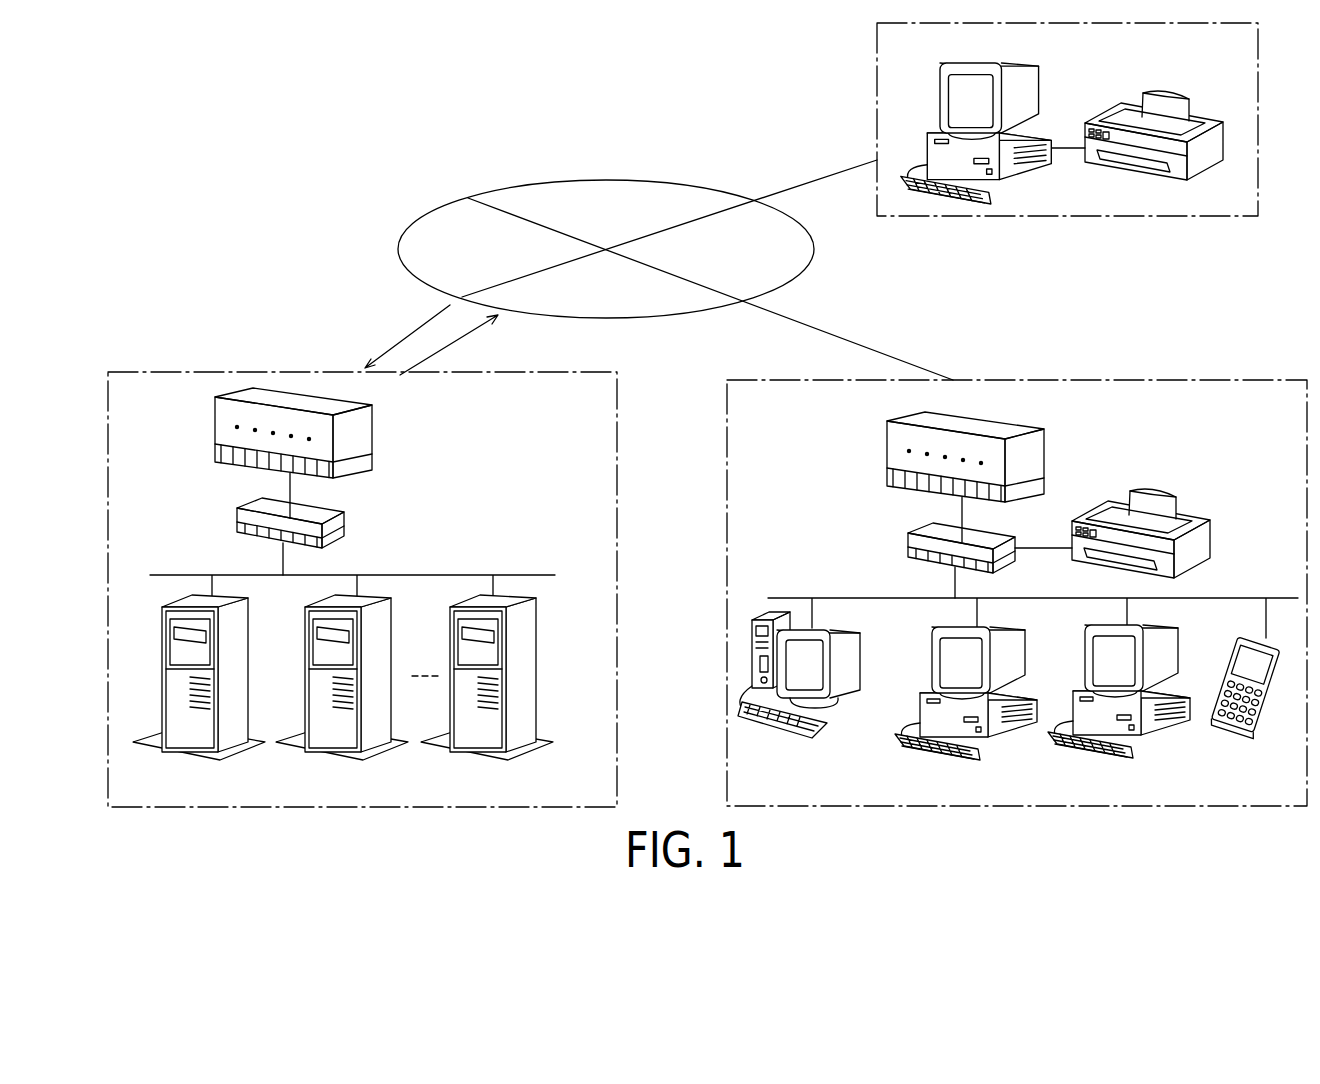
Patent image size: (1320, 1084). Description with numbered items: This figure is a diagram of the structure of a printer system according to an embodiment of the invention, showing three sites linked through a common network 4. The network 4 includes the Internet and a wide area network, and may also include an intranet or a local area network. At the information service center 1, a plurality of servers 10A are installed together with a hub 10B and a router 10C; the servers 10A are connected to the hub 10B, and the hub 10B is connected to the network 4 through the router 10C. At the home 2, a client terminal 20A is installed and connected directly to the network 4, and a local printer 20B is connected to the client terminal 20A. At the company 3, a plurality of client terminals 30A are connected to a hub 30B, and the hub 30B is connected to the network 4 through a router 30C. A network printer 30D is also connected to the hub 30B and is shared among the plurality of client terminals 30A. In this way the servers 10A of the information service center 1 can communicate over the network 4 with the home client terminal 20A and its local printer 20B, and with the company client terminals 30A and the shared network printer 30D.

The information service center 1 is at (157, 372).
The home 2 is at (877, 63).
The company 3 is at (1179, 378).
The network 4 is at (592, 182).
The servers 10A is at (190, 757).
The hub 10B is at (345, 527).
The router 10C is at (372, 436).
The client terminal 20A is at (1015, 74).
The printer 20B is at (1185, 118).
The client terminals 30A is at (808, 742).
The hub 30B is at (908, 550).
The router 30C is at (887, 453).
The printer 30D is at (1200, 518).